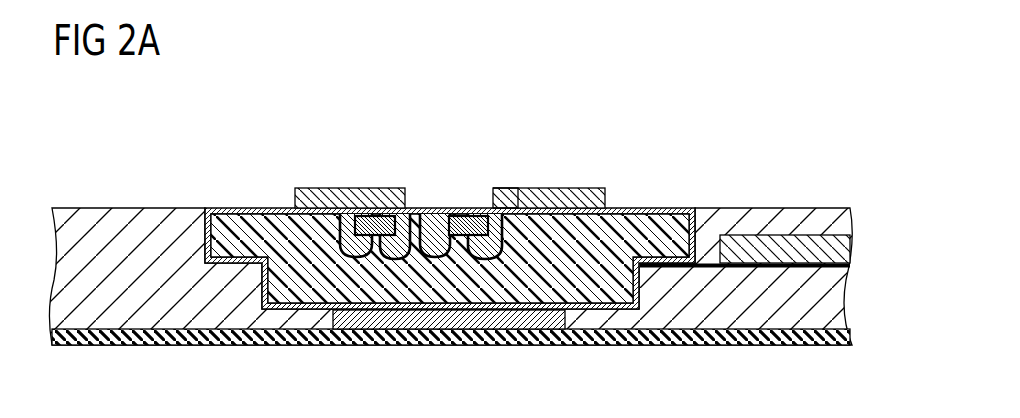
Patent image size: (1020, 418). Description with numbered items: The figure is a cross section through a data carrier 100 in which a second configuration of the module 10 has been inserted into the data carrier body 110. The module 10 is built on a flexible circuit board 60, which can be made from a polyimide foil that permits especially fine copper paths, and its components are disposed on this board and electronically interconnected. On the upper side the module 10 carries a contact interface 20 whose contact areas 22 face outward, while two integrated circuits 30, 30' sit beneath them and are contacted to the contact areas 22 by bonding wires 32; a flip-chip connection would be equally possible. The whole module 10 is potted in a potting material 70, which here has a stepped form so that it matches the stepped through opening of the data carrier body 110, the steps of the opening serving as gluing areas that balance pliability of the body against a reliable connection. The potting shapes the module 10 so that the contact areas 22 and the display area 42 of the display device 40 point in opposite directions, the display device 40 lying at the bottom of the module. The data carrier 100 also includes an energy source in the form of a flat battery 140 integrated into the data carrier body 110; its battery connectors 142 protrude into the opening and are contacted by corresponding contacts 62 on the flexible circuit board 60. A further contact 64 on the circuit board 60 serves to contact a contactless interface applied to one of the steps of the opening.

The data carrier 100 is at (197, 148).
The module 10 is at (643, 160).
The data carrier body 110 is at (127, 208).
The flexible circuit board 60 is at (248, 208).
The potting material 70 is at (288, 208).
The contact areas 22 is at (323, 188).
The integrated circuit 30 is at (376, 193).
The integrated circuit 30' is at (466, 198).
The contact interface 20 is at (492, 194).
The bonding wires 32 is at (518, 200).
The contacts 62 is at (670, 242).
The battery 140 is at (766, 236).
The battery connectors 142 is at (652, 282).
The further contact 64 is at (300, 310).
The display device 40 is at (450, 318).
The display area 42 is at (497, 347).